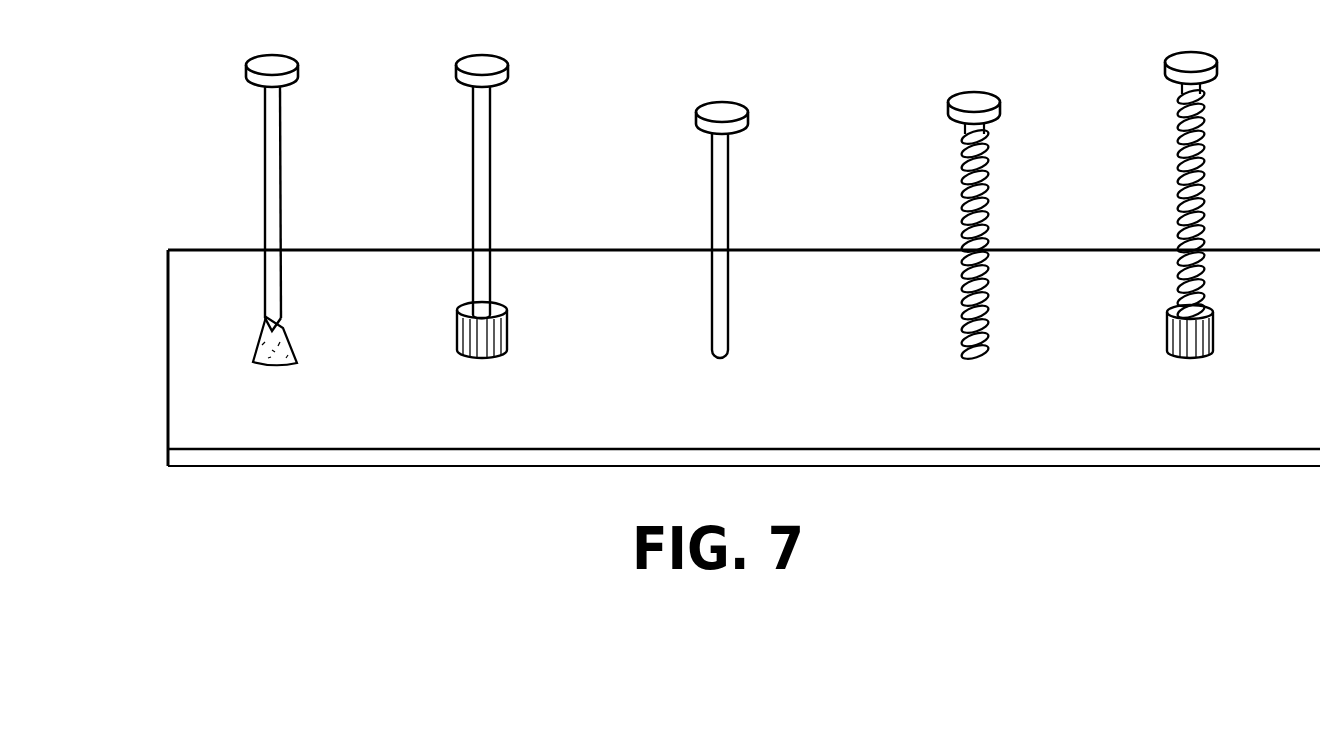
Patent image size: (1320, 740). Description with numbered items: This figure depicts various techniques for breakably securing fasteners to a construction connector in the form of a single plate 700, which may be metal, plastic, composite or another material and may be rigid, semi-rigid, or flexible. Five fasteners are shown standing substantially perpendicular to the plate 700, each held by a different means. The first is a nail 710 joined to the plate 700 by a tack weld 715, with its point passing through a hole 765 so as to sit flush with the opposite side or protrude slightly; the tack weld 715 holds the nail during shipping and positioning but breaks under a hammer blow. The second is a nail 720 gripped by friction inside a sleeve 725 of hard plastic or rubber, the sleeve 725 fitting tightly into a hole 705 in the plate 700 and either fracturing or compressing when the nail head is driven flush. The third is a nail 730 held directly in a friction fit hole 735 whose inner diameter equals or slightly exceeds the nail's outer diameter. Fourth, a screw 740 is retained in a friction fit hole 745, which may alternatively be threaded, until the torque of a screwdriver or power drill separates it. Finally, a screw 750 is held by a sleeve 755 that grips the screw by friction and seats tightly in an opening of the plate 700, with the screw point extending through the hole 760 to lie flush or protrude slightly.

The plate 700 is at (237, 407).
The hole 705 is at (460, 340).
The nail 710 is at (265, 157).
The tack weld 715 is at (271, 329).
The nail 720 is at (473, 142).
The sleeve 725 is at (490, 303).
The nail 730 is at (722, 158).
The friction fit hole 735 is at (725, 348).
The screw 740 is at (965, 157).
The friction fit hole 745 is at (962, 337).
The screw 750 is at (1180, 158).
The sleeve 755 is at (1208, 307).
The hole 760 is at (1172, 308).
The hole 765 is at (255, 355).